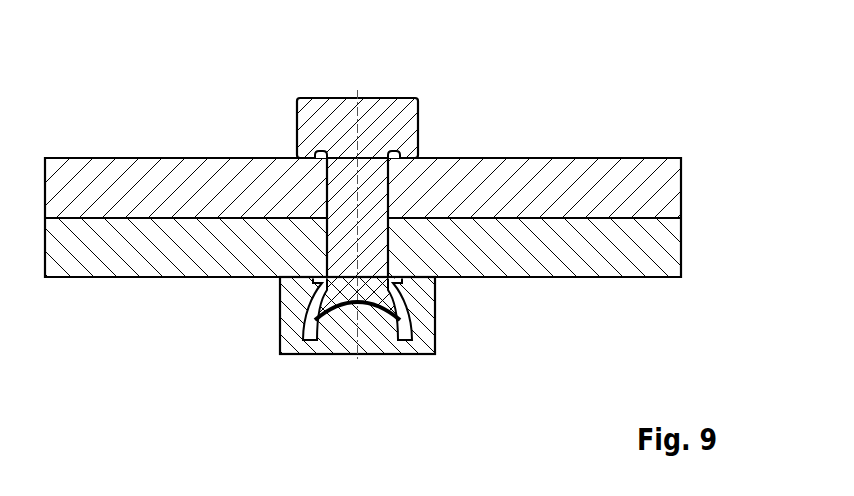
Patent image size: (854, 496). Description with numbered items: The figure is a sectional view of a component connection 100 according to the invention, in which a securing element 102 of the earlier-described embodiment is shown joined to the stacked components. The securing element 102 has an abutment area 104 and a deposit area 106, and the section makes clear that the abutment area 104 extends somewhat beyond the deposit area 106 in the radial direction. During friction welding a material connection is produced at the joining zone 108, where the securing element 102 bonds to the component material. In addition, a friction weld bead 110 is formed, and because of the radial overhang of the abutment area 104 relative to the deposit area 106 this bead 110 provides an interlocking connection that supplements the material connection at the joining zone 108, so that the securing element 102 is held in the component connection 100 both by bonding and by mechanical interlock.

The component connection 100 is at (492, 117).
The securing element 102 is at (420, 313).
The abutment area 104 is at (304, 281).
The deposit area 106 is at (317, 333).
The joining zone 108 is at (353, 310).
The friction weld bead 110 is at (300, 318).